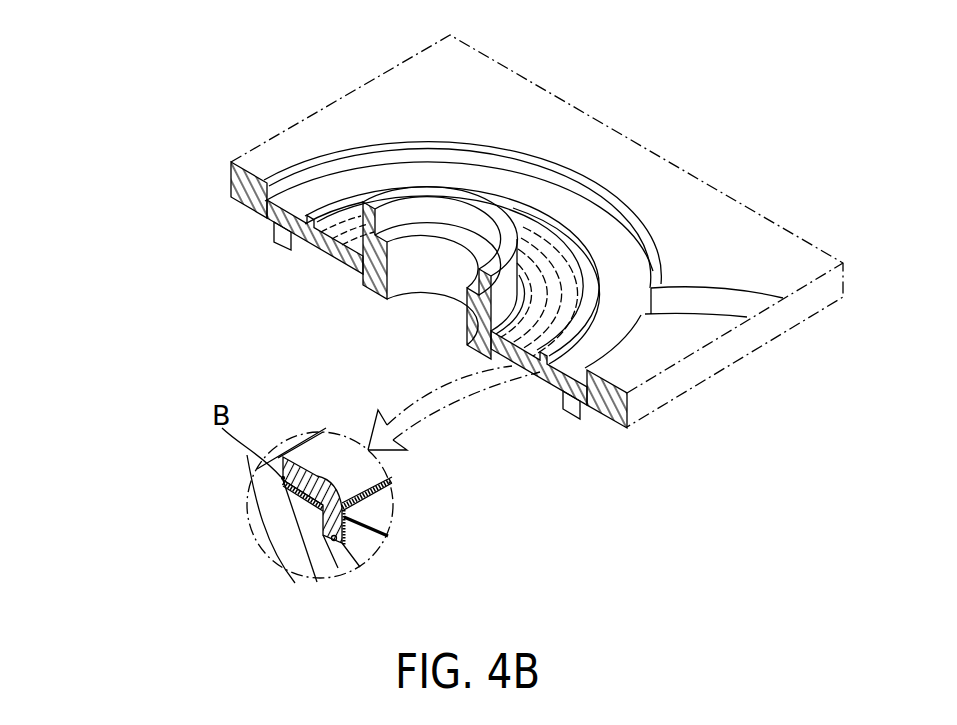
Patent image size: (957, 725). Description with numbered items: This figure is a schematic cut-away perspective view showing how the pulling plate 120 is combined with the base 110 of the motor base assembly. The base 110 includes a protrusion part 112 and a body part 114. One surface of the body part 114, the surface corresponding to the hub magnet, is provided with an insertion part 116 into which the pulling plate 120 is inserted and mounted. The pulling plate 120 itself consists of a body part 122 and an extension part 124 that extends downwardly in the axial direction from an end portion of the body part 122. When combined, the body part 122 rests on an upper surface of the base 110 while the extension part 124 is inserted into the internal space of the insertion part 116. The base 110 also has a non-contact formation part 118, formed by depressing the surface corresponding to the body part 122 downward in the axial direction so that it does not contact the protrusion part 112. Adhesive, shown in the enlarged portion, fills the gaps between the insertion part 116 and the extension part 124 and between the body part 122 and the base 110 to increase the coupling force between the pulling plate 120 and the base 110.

The base 110 is at (287, 364).
The protrusion part 112 is at (378, 257).
The body part 114 is at (271, 203).
The insertion part 116 is at (327, 568).
The non-contact formation part 118 is at (323, 535).
The pulling plate 120 is at (558, 222).
The body part 122 is at (389, 478).
The extension part 124 is at (392, 517).